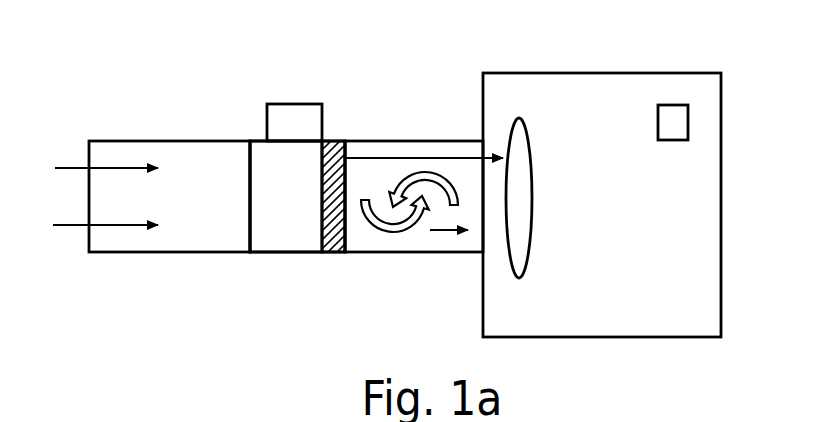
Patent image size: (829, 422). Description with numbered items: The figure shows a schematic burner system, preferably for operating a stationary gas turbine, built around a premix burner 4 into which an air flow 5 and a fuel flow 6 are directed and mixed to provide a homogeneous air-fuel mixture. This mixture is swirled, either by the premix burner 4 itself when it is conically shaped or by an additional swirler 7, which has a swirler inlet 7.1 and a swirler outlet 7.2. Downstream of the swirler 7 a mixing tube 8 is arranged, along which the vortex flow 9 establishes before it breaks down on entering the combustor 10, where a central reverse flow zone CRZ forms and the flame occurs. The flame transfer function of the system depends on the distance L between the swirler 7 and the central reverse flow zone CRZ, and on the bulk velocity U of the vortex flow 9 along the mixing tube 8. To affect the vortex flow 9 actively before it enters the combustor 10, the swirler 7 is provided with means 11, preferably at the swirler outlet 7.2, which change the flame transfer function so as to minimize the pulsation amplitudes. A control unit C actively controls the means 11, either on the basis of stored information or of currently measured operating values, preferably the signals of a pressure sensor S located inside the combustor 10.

The premix burner 4 is at (205, 205).
The air flow 5 is at (97, 168).
The fuel flow 6 is at (96, 225).
The swirler 7 is at (342, 270).
The swirler inlet 7.1 is at (248, 140).
The swirler outlet 7.2 is at (345, 141).
The means for affecting the vortex flow 11 is at (330, 148).
The mixing tube 8 is at (403, 255).
The vortex flow 9 is at (378, 229).
The combustor 10 is at (572, 73).
The control unit C is at (290, 104).
The distance between swirler and central reverse flow zone L is at (440, 157).
The bulk velocity U is at (448, 232).
The pressure sensor S is at (676, 115).
The central reverse flow zone CRZ is at (521, 217).